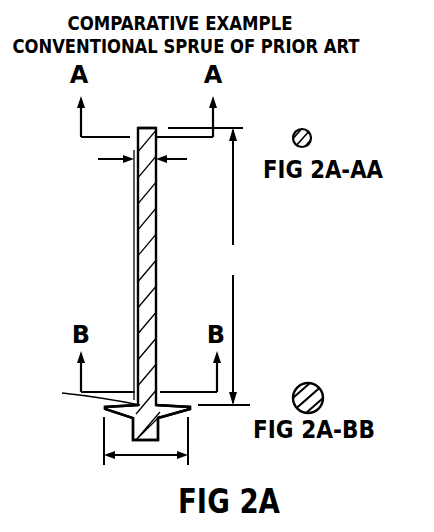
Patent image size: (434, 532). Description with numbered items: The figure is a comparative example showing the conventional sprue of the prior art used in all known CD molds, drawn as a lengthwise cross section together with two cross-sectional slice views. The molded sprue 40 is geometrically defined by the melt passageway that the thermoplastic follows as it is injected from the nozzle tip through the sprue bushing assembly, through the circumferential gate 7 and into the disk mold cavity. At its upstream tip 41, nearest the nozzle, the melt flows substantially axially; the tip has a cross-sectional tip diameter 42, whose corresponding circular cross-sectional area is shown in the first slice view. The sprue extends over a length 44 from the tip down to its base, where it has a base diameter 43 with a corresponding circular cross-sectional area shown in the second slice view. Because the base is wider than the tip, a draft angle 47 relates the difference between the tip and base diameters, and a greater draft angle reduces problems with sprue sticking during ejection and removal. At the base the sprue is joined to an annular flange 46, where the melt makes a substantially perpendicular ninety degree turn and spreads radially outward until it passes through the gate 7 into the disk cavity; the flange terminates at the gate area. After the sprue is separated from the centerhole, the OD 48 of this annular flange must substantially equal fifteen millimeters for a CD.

In FIG. 2A, the molded sprue 40 is at (97, 229).
In FIG. 2A, the upstream tip 41 is at (147, 127).
In FIG. 2A-AA, the cross-sectional tip diameter 42 is at (308, 125).
In FIG. 2A-BB, the base diameter 43 is at (322, 391).
In FIG. 2A, the length 44 is at (209, 266).
In FIG. 2A, the annular flange 46 is at (110, 409).
In FIG. 2A, the draft angle 47 is at (126, 157).
In FIG. 2A, the OD of the annular flange 48 is at (146, 449).
In FIG. 2A, the circumferential gate 7 is at (93, 387).